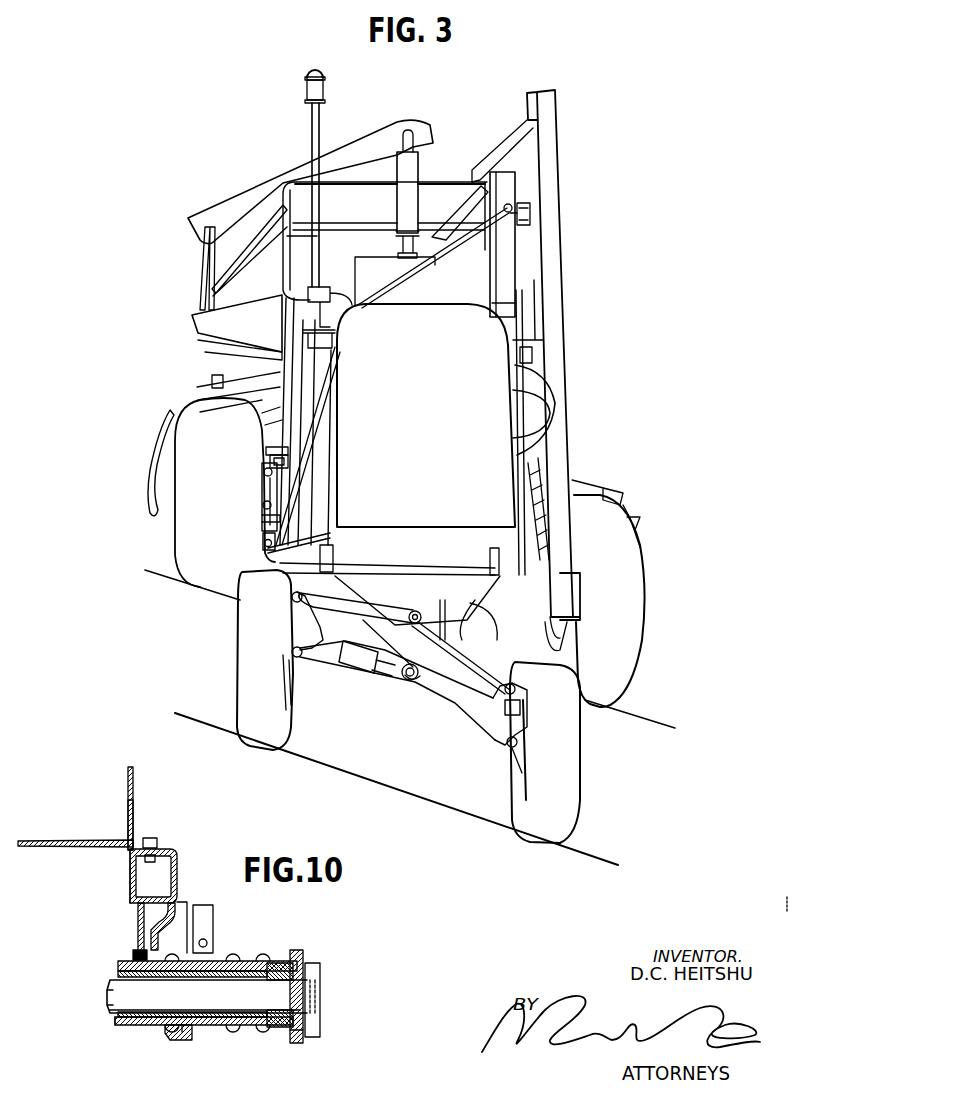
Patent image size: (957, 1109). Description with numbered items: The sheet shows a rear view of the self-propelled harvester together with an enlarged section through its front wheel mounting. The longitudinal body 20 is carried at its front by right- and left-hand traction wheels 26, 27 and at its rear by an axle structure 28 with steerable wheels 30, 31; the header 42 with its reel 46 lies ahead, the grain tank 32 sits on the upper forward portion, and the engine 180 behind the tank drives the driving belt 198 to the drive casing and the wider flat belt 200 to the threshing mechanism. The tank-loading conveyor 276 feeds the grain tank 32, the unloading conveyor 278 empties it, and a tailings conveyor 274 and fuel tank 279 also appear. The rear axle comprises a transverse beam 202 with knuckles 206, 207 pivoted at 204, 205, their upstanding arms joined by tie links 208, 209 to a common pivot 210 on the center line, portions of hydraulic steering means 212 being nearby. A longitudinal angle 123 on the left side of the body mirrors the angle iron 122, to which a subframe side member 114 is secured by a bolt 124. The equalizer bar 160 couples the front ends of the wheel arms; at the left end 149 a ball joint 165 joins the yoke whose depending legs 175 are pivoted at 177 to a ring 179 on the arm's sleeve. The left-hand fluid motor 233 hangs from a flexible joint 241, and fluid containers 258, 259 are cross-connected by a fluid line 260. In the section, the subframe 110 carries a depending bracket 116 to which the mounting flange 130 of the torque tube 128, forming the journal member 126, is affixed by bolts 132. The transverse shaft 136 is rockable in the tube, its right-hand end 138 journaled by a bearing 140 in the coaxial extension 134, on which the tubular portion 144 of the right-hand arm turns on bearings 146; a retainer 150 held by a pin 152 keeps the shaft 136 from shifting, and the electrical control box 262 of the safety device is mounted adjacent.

In FIG. 3, the longitudinal body 20 is at (428, 344).
In FIG. 10, the longitudinal body 20 is at (137, 787).
In FIG. 3, the right-hand traction wheel 26 is at (620, 696).
In FIG. 3, the left-hand traction wheel 27 is at (182, 562).
In FIG. 3, the axle structure 28 is at (372, 673).
In FIG. 3, the right-hand steerable wheel 30 is at (567, 827).
In FIG. 3, the left-hand steerable wheel 31 is at (243, 712).
In FIG. 3, the grain tank 32 is at (448, 195).
In FIG. 3, the header 42 is at (143, 487).
In FIG. 3, the reel 46 is at (218, 378).
In FIG. 3, the angle iron 122 is at (490, 553).
In FIG. 10, the angle iron 122 is at (135, 818).
In FIG. 3, the longitudinal angle 123 is at (334, 550).
In FIG. 3, the front end of left-hand wheel-supporting arm 149 is at (260, 530).
In FIG. 3, the equalizer bar 160 is at (270, 466).
In FIG. 3, the left-hand longitudinal pivot 165 is at (264, 473).
In FIG. 3, the depending legs 175 is at (268, 489).
In FIG. 3, the pivot connection 177 is at (263, 507).
In FIG. 3, the ring 179 is at (262, 517).
In FIG. 3, the internal combustion engine 180 is at (365, 267).
In FIG. 3, the driving belt 198 is at (293, 362).
In FIG. 3, the flat belt 200 is at (320, 372).
In FIG. 3, the transverse beam 202 is at (460, 707).
In FIG. 3, the knuckle pivot 204 is at (516, 741).
In FIG. 3, the knuckle pivot 205 is at (292, 653).
In FIG. 3, the knuckle 206 is at (516, 695).
In FIG. 3, the knuckle 207 is at (310, 627).
In FIG. 3, the tie link 208 is at (478, 662).
In FIG. 3, the tie link 209 is at (377, 607).
In FIG. 3, the common pivot 210 is at (425, 600).
In FIG. 3, the hydraulic steering means 212 is at (490, 627).
In FIG. 3, the left-hand fluid motor 233 is at (285, 348).
In FIG. 3, the left-hand flexible joint 241 is at (273, 461).
In FIG. 3, the right-hand fluid container 258 is at (533, 213).
In FIG. 3, the left-hand fluid container 259 is at (293, 213).
In FIG. 3, the fluid line 260 is at (375, 237).
In FIG. 3, the tailings conveyor 274 is at (525, 473).
In FIG. 3, the tank-loading conveyor 276 is at (550, 160).
In FIG. 3, the unloading conveyor 278 is at (197, 318).
In FIG. 3, the fuel tank 279 is at (545, 382).
In FIG. 10, the subframe 110 is at (120, 882).
In FIG. 10, the right-hand longitudinal side member 114 is at (130, 862).
In FIG. 10, the depending support or bracket 116 is at (140, 922).
In FIG. 10, the bolt 124 is at (147, 842).
In FIG. 10, the transverse journal member 126 is at (121, 1035).
In FIG. 10, the torque tube 128 is at (143, 1027).
In FIG. 10, the right-hand mounting flange 130 is at (150, 941).
In FIG. 10, the bolt 132 is at (133, 955).
In FIG. 10, the coaxial extension 134 is at (247, 968).
In FIG. 10, the transverse shaft 136 is at (127, 998).
In FIG. 10, the right-hand end of shaft 138 is at (318, 995).
In FIG. 10, the bearing 140 is at (248, 1027).
In FIG. 10, the transverse tubular portion 144 is at (268, 957).
In FIG. 10, the bearings 146 is at (277, 1035).
In FIG. 10, the retainer 150 is at (312, 963).
In FIG. 10, the pin 152 is at (308, 1037).
In FIG. 10, the electrical control box 262 is at (204, 912).